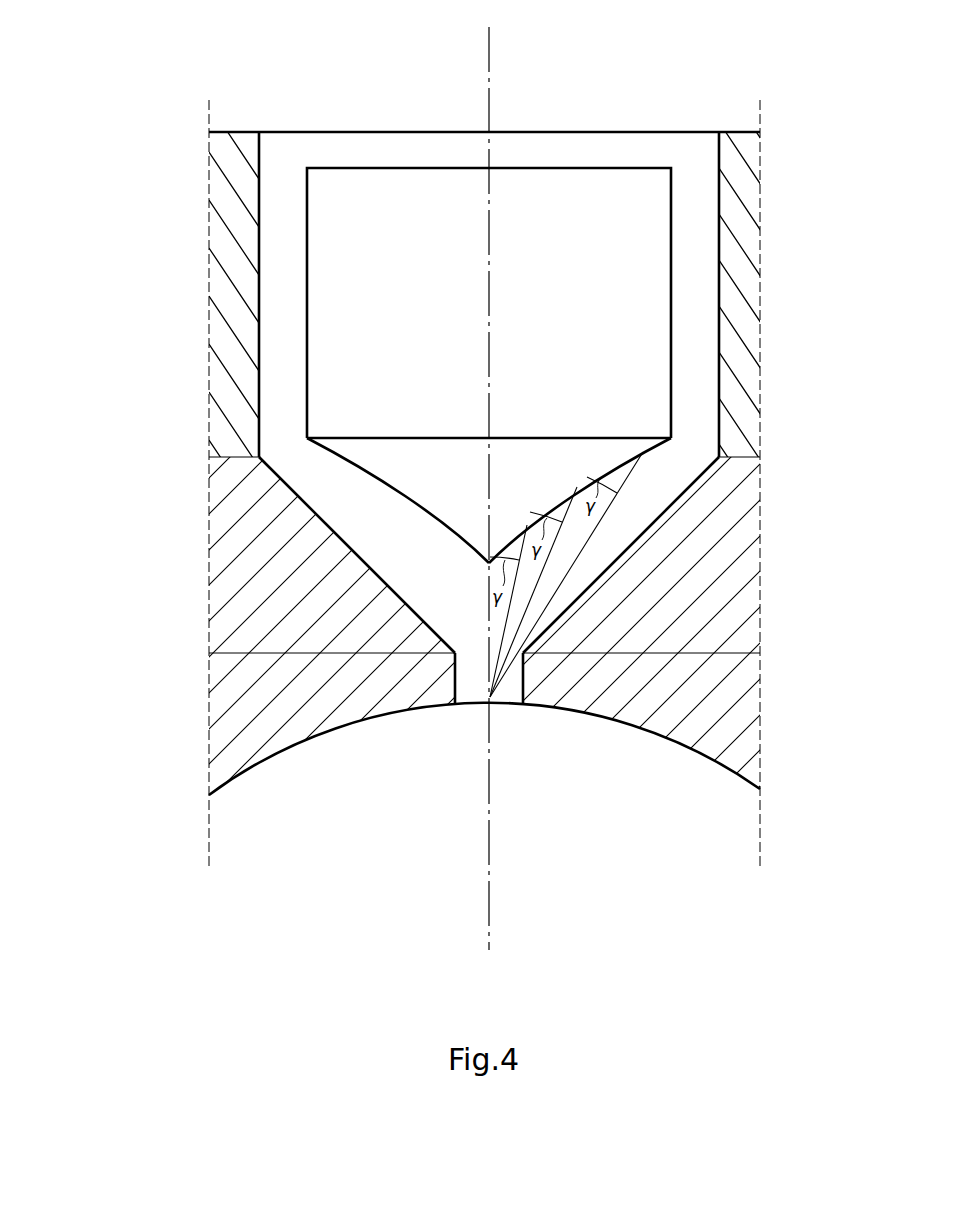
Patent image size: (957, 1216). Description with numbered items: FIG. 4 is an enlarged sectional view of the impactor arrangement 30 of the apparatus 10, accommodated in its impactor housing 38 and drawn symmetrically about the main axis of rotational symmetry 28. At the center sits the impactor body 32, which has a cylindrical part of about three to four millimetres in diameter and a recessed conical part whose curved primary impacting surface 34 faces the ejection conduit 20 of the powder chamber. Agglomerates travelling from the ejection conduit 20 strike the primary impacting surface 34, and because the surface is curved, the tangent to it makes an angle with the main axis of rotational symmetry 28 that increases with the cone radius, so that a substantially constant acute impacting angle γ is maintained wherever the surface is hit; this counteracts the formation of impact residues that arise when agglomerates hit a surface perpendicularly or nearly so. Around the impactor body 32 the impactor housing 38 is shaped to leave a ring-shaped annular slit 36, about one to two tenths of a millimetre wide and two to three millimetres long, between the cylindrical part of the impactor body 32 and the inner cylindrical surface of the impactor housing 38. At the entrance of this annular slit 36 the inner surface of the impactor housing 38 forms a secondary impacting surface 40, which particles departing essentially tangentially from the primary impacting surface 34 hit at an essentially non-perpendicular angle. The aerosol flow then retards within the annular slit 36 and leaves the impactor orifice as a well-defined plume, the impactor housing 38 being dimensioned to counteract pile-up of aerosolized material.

The apparatus 10 is at (655, 692).
The ejection conduit 20 is at (497, 690).
The main axis of rotational symmetry 28 is at (488, 55).
The impactor arrangement 30 is at (157, 486).
The impactor body 32 is at (520, 202).
The primary impacting surface 34 is at (588, 480).
The annular slit 36 is at (693, 253).
The impactor housing 38 is at (626, 553).
The secondary impacting surface 40 is at (720, 409).